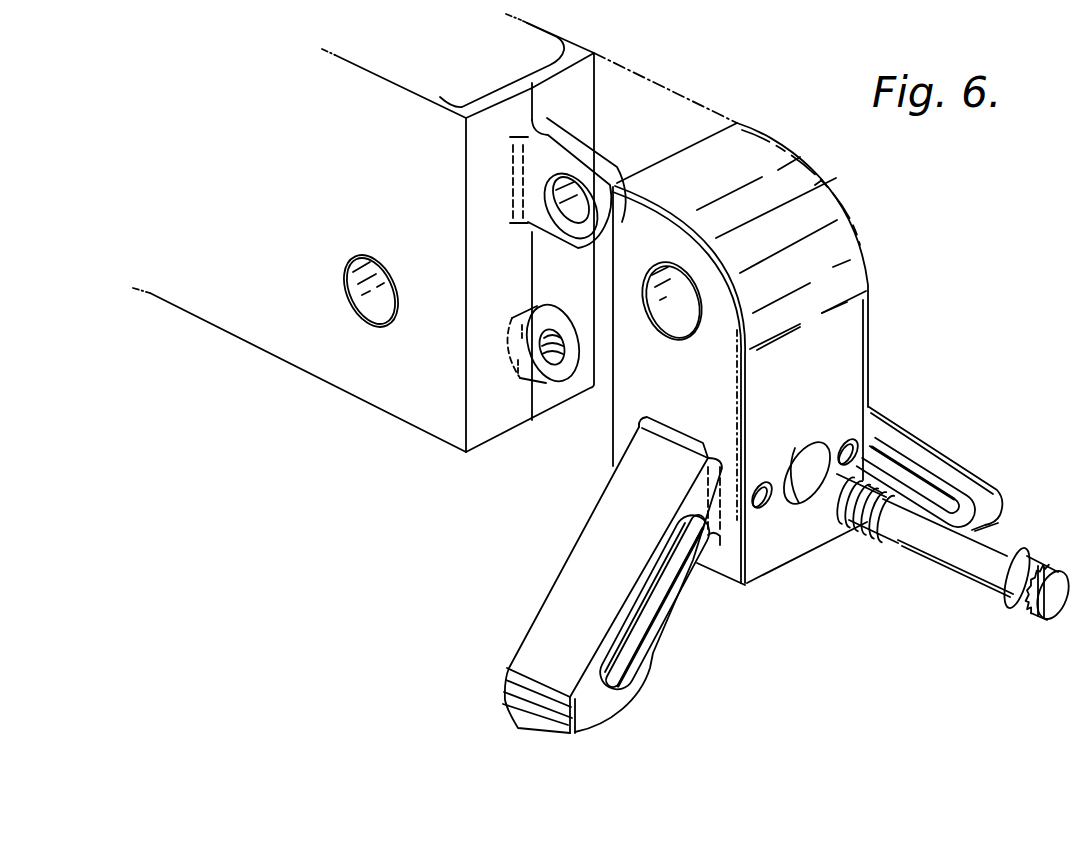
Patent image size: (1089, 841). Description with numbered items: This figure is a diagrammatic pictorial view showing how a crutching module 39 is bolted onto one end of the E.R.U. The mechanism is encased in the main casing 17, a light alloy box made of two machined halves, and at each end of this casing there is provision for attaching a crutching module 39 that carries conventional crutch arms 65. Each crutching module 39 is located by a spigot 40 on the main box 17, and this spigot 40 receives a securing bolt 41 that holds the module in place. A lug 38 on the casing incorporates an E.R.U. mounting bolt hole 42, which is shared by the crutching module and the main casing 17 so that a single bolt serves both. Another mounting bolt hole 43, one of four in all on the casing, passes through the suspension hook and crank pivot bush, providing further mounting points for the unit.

The main casing 17 is at (388, 388).
The lug 38 is at (593, 157).
The crutching module 39 is at (845, 343).
The spigot 40 is at (520, 378).
The securing bolt 41 is at (990, 553).
The E.R.U. mounting bolt hole 42 is at (667, 283).
The mounting bolt hole 43 is at (386, 262).
The crutch arm 65 is at (672, 608).